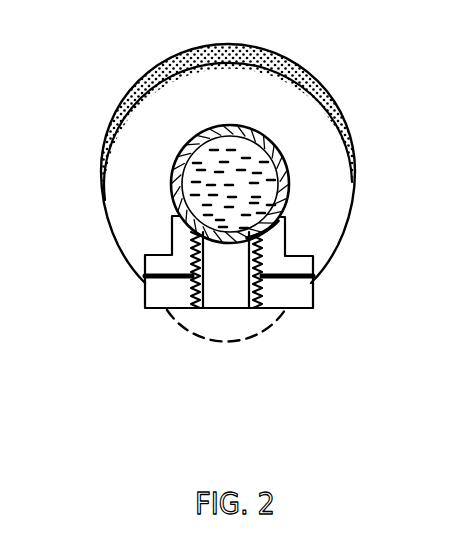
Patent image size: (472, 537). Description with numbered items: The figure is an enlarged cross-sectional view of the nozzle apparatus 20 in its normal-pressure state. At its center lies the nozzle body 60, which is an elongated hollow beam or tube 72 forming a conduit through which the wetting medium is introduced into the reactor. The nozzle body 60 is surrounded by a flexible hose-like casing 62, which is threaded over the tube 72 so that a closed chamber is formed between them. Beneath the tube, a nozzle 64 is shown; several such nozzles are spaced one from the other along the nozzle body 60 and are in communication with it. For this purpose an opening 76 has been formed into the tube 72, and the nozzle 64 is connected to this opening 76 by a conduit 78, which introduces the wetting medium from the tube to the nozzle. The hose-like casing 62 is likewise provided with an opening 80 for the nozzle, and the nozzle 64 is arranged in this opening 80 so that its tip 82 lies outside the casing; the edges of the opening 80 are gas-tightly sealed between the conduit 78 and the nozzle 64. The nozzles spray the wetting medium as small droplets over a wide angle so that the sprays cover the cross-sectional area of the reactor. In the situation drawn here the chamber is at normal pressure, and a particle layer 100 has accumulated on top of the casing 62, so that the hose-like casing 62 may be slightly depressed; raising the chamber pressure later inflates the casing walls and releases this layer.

The connector assembly 20 is at (232, 248).
The nozzle body 60 is at (234, 154).
The flexible hose-like casing 62 is at (347, 126).
The nozzle 64 is at (232, 343).
The tube 72 is at (290, 188).
The opening 76 is at (260, 243).
The conduit 78 is at (172, 260).
The opening 80 is at (237, 287).
The tip 82 is at (231, 323).
The particle layer 100 is at (133, 101).